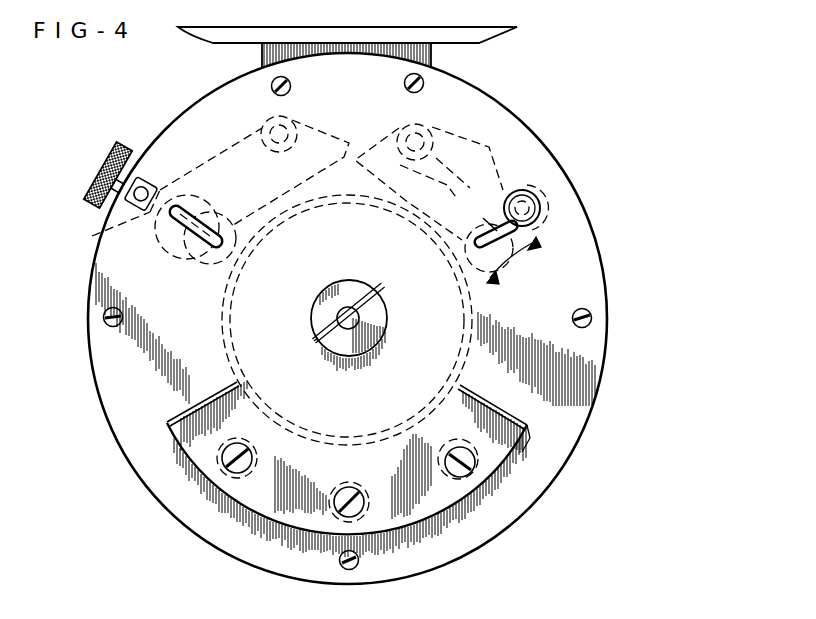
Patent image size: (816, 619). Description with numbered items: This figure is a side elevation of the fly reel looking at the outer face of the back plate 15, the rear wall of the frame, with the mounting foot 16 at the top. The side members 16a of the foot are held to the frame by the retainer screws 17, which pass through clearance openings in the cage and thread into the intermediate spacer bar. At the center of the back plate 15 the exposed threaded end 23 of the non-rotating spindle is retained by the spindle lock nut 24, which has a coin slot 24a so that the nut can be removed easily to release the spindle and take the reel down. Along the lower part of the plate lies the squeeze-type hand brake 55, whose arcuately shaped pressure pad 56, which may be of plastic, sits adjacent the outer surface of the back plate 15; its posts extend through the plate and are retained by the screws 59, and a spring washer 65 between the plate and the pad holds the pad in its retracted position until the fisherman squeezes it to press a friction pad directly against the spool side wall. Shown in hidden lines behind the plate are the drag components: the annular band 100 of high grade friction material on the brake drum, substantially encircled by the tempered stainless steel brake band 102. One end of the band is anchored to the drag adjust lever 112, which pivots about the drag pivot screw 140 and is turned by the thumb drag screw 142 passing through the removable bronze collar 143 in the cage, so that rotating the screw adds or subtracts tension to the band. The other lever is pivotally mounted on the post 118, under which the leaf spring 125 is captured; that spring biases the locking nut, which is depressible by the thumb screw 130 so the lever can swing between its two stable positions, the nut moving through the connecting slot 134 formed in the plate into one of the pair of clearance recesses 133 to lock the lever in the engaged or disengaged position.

The back plate 15 is at (581, 248).
The mounting foot 16 is at (466, 32).
The side members 16a is at (434, 58).
The retainer screws 17 is at (593, 321).
The threaded end 23 is at (355, 304).
The spindle lock nut 24 is at (380, 314).
The coin slot 24a is at (314, 338).
The hand brake 55 is at (486, 486).
The pressure pad 56 is at (390, 479).
The screws 59 is at (338, 490).
The spring washer 65 is at (478, 444).
The annular band of friction material 100 is at (432, 331).
The brake band 102 is at (222, 312).
The drag adjust lever 112 is at (213, 162).
The post 118 is at (419, 128).
The leaf spring 125 is at (479, 158).
The thumb screw 130 is at (540, 202).
The clearance recesses 133 is at (466, 233).
The connecting slot 134 is at (182, 226).
The drag pivot screw 140 is at (262, 124).
The thumb drag screw 142 is at (110, 156).
The bronze collar 143 is at (92, 236).